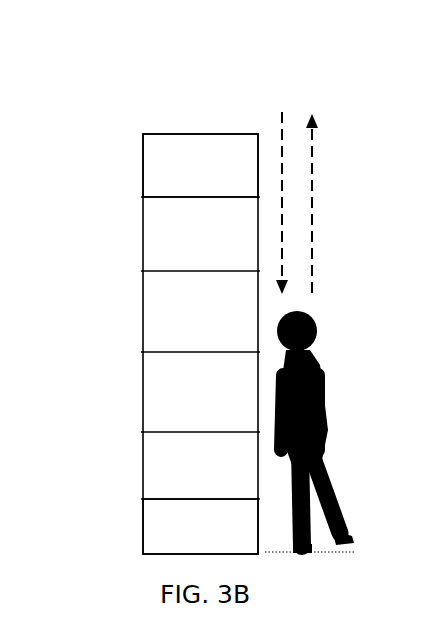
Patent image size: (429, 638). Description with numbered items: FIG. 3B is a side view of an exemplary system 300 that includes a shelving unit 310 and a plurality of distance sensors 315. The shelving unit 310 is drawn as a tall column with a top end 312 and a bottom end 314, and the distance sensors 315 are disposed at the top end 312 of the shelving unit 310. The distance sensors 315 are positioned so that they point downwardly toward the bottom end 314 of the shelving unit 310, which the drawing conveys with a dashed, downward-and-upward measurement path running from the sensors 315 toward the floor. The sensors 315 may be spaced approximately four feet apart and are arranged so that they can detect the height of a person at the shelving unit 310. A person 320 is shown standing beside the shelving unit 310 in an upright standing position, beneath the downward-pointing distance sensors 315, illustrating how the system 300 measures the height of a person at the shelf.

The system 300 is at (166, 56).
The shelving unit 310 is at (122, 309).
The top end 312 is at (172, 135).
The bottom end 314 is at (162, 555).
The distance sensors 315 is at (297, 182).
The person 320 is at (333, 373).